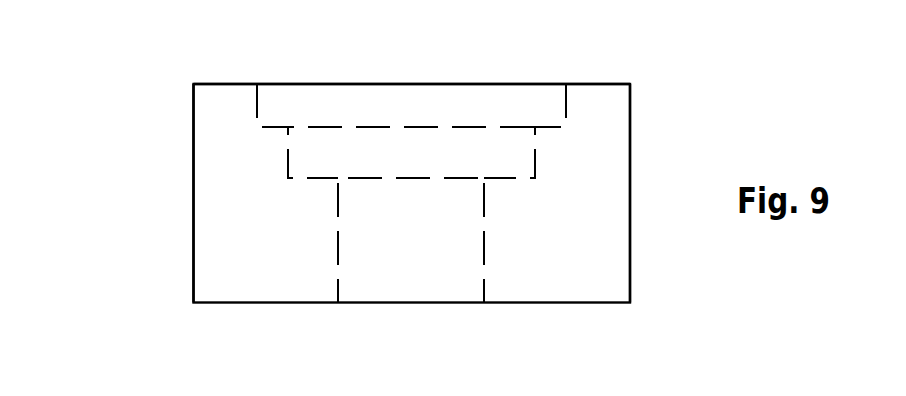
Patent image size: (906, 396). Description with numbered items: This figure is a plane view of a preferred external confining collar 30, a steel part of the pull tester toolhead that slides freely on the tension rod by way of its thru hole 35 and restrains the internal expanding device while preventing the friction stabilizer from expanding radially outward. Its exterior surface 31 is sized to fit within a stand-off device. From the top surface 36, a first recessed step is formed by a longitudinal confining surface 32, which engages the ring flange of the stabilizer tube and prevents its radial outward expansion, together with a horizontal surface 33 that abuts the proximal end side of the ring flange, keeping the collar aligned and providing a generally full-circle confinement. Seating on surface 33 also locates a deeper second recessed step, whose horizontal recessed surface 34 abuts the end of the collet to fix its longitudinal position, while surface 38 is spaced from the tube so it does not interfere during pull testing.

The confining collar 30 is at (86, 118).
The exterior surface 31 is at (193, 246).
The longitudinal confining surface 32 is at (566, 110).
The horizontal surface 33 is at (552, 127).
The recessed surface 34 is at (318, 180).
The thru hole 35 is at (484, 280).
The top surface 36 is at (223, 84).
The surface 38 is at (288, 155).